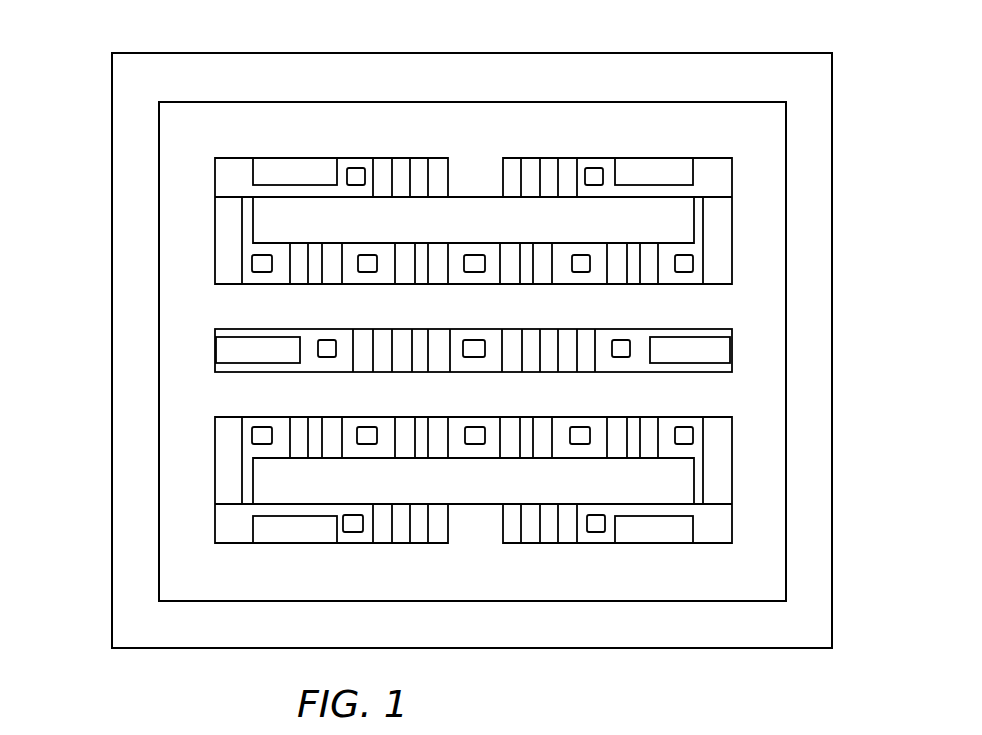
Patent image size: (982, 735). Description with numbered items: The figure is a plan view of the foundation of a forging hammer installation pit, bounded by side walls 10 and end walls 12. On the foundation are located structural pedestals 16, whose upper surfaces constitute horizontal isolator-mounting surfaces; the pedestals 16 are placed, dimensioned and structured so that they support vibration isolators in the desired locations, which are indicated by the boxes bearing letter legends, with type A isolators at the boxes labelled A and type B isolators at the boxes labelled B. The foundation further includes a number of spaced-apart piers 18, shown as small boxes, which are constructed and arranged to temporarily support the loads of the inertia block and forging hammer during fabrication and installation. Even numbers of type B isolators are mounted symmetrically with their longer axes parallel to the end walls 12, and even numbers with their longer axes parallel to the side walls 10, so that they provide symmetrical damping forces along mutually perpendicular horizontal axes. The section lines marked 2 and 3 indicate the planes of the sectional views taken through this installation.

The side walls 10 is at (411, 53).
The end walls 12 is at (112, 220).
The structural pedestals 16 is at (235, 165).
The piers 18 is at (357, 168).
The section line 2- 2 is at (82, 383).
The section line 3- 3 is at (522, 5).